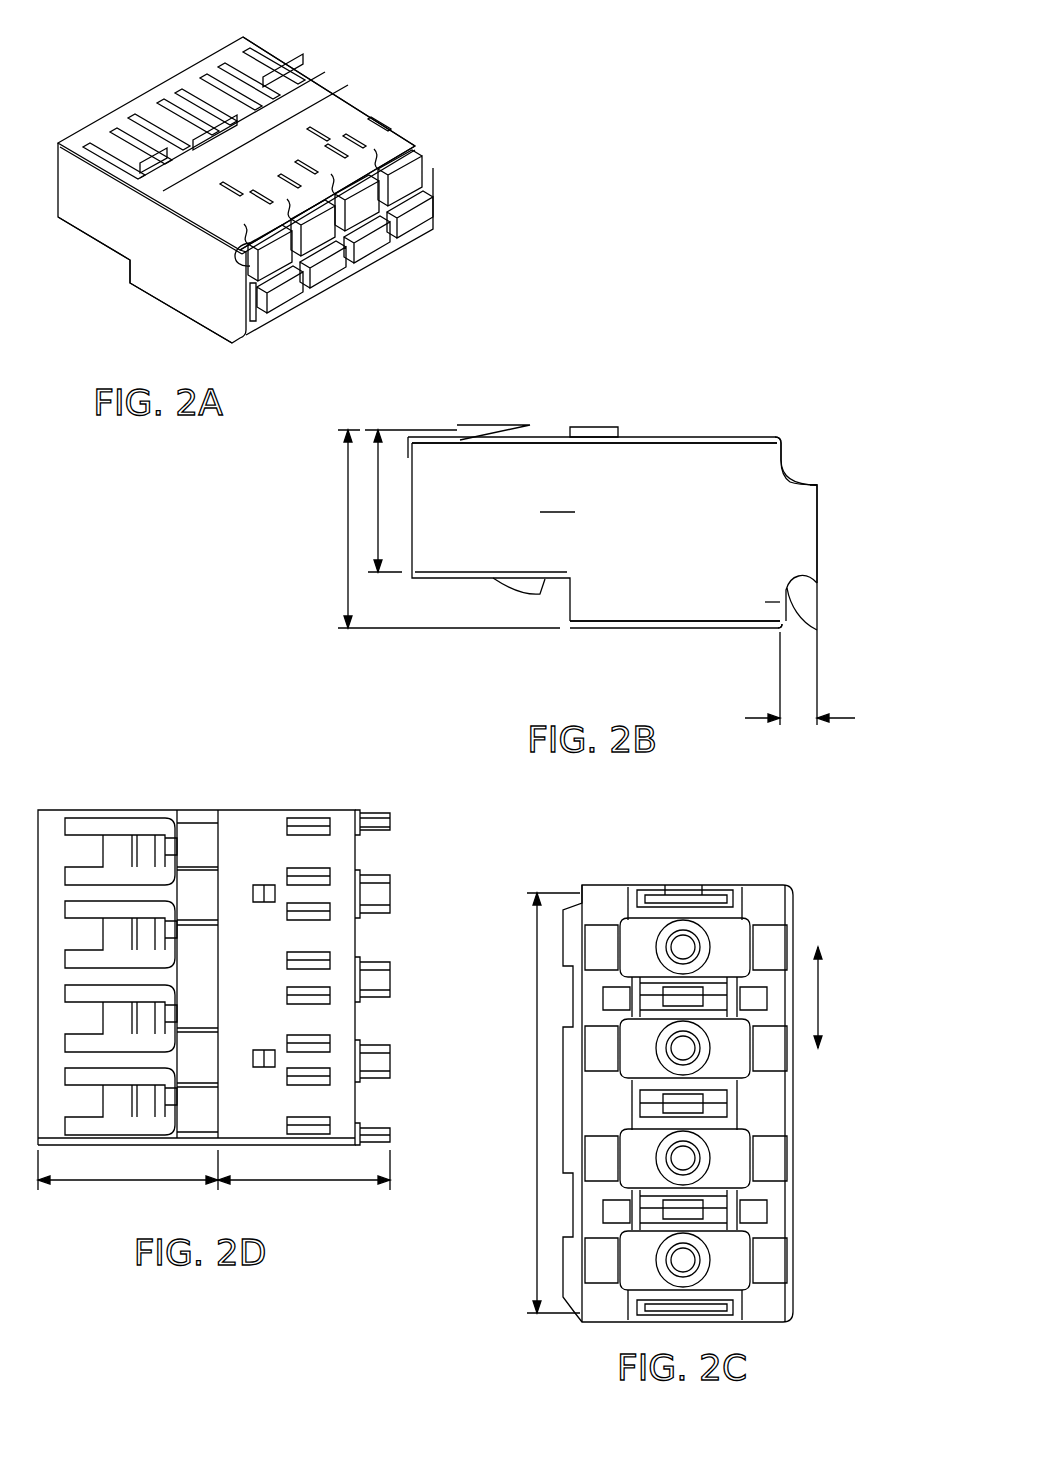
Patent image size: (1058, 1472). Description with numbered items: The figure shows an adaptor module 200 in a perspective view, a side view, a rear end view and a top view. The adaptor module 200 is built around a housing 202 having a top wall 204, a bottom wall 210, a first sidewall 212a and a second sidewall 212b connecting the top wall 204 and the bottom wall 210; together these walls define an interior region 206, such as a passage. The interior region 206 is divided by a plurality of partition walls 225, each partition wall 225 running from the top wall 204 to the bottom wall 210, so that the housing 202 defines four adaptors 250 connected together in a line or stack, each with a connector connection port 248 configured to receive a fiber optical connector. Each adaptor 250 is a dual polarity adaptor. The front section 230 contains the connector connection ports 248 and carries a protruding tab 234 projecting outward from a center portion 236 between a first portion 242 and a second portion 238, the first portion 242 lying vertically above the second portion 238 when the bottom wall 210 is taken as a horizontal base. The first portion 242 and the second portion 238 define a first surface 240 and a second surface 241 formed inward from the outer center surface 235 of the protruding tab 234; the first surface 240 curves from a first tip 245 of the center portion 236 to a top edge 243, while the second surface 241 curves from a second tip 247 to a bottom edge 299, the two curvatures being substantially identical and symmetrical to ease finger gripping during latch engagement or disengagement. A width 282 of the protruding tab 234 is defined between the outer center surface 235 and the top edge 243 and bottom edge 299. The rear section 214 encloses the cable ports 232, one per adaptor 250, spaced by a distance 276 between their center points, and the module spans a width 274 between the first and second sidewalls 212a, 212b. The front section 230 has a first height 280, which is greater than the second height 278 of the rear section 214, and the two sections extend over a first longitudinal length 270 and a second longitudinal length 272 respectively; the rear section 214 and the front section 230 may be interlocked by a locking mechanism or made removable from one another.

In FIG. 2A, the adaptor module 200 is at (130, 80).
In FIG. 2B, the adaptor module 200 is at (671, 352).
In FIG. 2D, the adaptor module 200 is at (235, 775).
In FIG. 2C, the adaptor module 200 is at (785, 865).
In FIG. 2A, the housing 202 is at (412, 138).
In FIG. 2B, the housing 202 is at (682, 463).
In FIG. 2D, the housing 202 is at (195, 812).
In FIG. 2A, the top wall 204 is at (328, 107).
In FIG. 2B, the top wall 204 is at (662, 437).
In FIG. 2A, the interior region 206 is at (300, 272).
In FIG. 2A, the bottom wall 210 is at (400, 245).
In FIG. 2B, the bottom wall 210 is at (628, 630).
In FIG. 2A, the first sidewall 212a is at (187, 285).
In FIG. 2C, the first sidewall 212a is at (793, 1322).
In FIG. 2A, the second sidewall 212b is at (378, 110).
In FIG. 2C, the second sidewall 212b is at (793, 885).
In FIG. 2A, the rear section 214 is at (150, 73).
In FIG. 2B, the rear section 214 is at (465, 440).
In FIG. 2D, the rear section 214 is at (60, 813).
In FIG. 2C, the rear section 214 is at (685, 886).
In FIG. 2A, the partition wall 225 is at (395, 225).
In FIG. 2B, the front section 230 is at (733, 487).
In FIG. 2D, the front section 230 is at (272, 812).
In FIG. 2B, the cable port 232 is at (557, 500).
In FIG. 2C, the cable port 232 is at (683, 947).
In FIG. 2B, the protruding tab 234 is at (800, 512).
In FIG. 2D, the protruding tab 234 is at (388, 894).
In FIG. 2B, the outer center surface 235 is at (818, 530).
In FIG. 2B, the center portion 236 is at (810, 557).
In FIG. 2B, the second portion 238 is at (765, 602).
In FIG. 2B, the first surface 240 is at (797, 480).
In FIG. 2B, the second surface 241 is at (823, 630).
In FIG. 2B, the first portion 242 is at (782, 470).
In FIG. 2B, the top edge 243 is at (783, 460).
In FIG. 2B, the first tip 245 is at (817, 487).
In FIG. 2B, the second tip 247 is at (817, 583).
In FIG. 2A, the connector connection port 248 is at (270, 310).
In FIG. 2A, the adaptor 250 is at (286, 297).
In FIG. 2D, the first longitudinal length 270 is at (300, 1183).
In FIG. 2D, the second longitudinal length 272 is at (118, 1183).
In FIG. 2C, the width 274 is at (537, 1130).
In FIG. 2C, the distance 276 is at (818, 997).
In FIG. 2B, the second height 278 is at (378, 487).
In FIG. 2B, the first height 280 is at (348, 552).
In FIG. 2B, the width 282 is at (795, 726).
In FIG. 2B, the bottom edge 299 is at (780, 627).